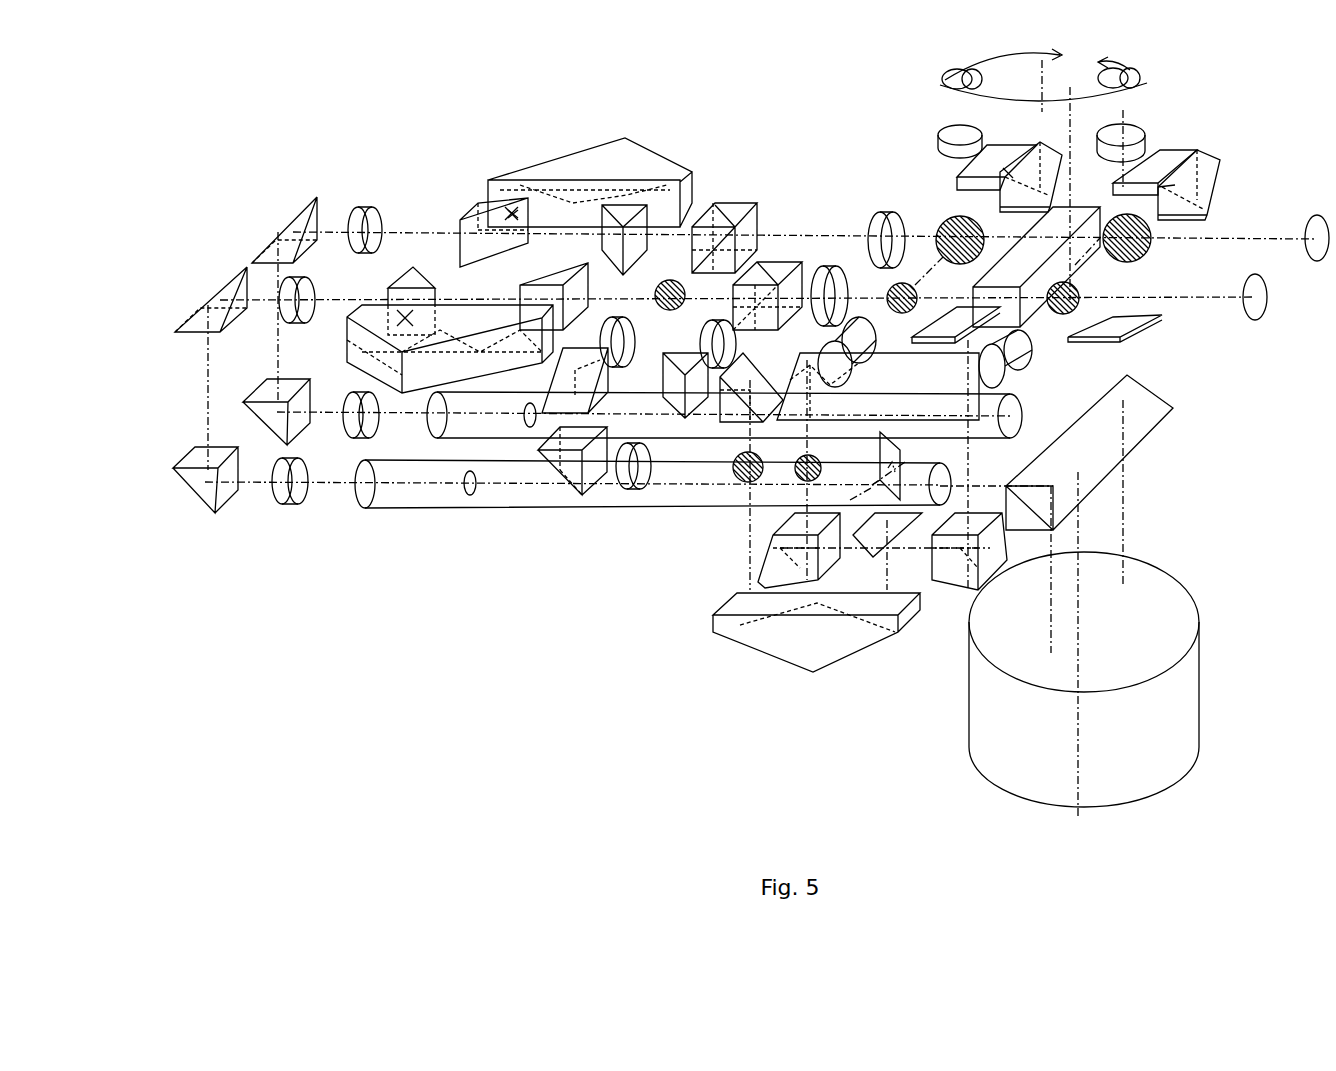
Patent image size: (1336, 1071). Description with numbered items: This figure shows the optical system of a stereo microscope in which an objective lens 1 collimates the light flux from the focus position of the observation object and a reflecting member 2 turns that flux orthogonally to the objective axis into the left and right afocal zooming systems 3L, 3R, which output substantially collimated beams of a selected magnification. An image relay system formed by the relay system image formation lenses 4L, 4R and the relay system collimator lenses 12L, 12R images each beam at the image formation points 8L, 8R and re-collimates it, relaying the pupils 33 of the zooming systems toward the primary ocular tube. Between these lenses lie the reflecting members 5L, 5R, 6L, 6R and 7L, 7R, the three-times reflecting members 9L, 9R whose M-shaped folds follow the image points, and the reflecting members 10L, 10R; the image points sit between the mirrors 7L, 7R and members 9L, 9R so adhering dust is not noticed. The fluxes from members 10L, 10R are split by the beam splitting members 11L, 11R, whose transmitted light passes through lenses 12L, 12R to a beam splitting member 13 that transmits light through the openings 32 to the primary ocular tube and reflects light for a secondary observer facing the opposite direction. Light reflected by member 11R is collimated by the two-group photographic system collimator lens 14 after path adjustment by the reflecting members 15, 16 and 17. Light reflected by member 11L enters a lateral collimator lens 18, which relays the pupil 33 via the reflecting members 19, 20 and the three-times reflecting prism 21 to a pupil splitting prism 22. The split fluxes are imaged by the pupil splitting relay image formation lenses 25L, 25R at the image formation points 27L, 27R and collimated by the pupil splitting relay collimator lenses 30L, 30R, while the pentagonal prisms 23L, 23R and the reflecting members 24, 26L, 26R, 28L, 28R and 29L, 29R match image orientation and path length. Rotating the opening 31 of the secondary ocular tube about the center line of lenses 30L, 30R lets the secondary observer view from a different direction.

The objective lens 1 is at (1160, 608).
The reflecting member 2 is at (1107, 474).
The left afocal zooming system 3L is at (390, 488).
The right afocal zooming system 3R is at (1014, 423).
The relay system image formation lenses 4L is at (347, 345).
The relay system image formation lenses 4R is at (347, 345).
The reflecting member 5L is at (195, 480).
The reflecting member 5R is at (247, 392).
The reflecting member 6L is at (200, 318).
The reflecting member 6R is at (272, 252).
The reflecting member 7L is at (422, 272).
The reflecting member 7R is at (505, 197).
The image formation point 8L is at (405, 317).
The image formation point 8R is at (515, 215).
The three-times reflecting member 9L is at (415, 380).
The three-times reflecting member 9R is at (618, 153).
The reflecting member 10L is at (560, 277).
The reflecting member 10R is at (628, 213).
The beam splitting member 11L is at (773, 262).
The beam splitting member 11R is at (735, 213).
The relay system collimator lens 12L is at (838, 265).
The relay system collimator lens 12R is at (883, 215).
The beam splitting member 13 is at (1075, 255).
The photographic system collimator lens 14 is at (623, 480).
The reflecting member 15 is at (565, 355).
The reflecting member 16 is at (572, 472).
The reflecting member 17 is at (905, 462).
The lateral collimator lens 18 is at (708, 348).
The reflecting member 19 is at (698, 400).
The reflecting member 20 is at (733, 407).
The three-times reflecting prism 21 is at (713, 632).
The pupil splitting prism 22 is at (872, 555).
The pentagonal prism 23L is at (778, 580).
The pentagonal prism 23R is at (950, 580).
The reflecting member 24 is at (998, 392).
The pupil splitting relay image formation lens 25L is at (835, 335).
The pupil splitting relay image formation lens 25R is at (1024, 354).
The reflecting member 26L is at (1022, 143).
The reflecting member 26R is at (1205, 178).
The pupil splitting relay image formation point 27L is at (1017, 172).
The pupil splitting relay image formation point 27R is at (1170, 175).
The reflecting member 28L is at (1012, 140).
The reflecting member 28R is at (1175, 185).
The reflecting member 29L is at (938, 335).
The reflecting member 29R is at (1135, 320).
The pupil splitting relay collimator lens 30L is at (940, 130).
The pupil splitting relay collimator lens 30R is at (1130, 135).
The opening of the secondary ocular tube optical system 31 is at (1135, 78).
The openings in the lens body housing 32 is at (1262, 305).
The pupil 33 is at (527, 425).